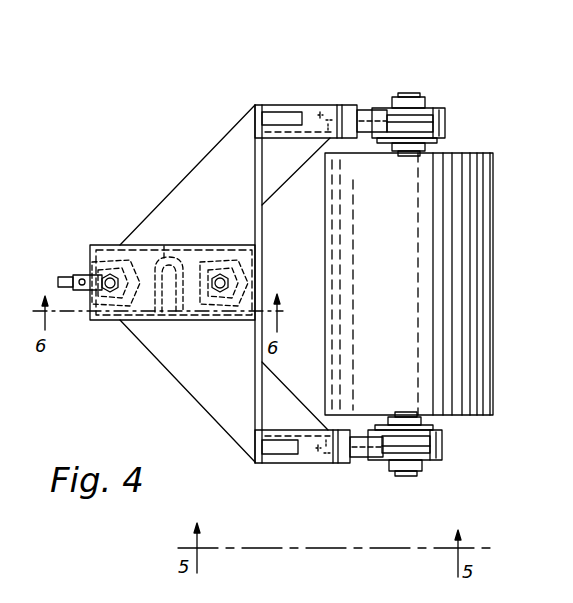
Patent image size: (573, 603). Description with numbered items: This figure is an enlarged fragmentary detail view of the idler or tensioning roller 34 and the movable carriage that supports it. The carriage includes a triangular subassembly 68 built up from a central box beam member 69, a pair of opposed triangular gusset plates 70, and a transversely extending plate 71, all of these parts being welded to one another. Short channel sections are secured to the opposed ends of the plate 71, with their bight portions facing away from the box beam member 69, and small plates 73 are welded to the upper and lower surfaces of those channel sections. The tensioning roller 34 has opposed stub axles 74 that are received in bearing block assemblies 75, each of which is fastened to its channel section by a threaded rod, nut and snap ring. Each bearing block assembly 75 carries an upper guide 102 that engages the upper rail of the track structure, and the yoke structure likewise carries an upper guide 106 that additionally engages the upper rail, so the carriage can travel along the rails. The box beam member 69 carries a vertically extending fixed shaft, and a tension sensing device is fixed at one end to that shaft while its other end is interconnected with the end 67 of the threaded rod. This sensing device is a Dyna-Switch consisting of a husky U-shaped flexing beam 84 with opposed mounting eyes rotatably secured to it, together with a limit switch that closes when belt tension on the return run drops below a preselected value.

The idler or tensioning roller 34 is at (494, 339).
The end of the threaded rod 67 is at (70, 277).
The triangular subassembly 68 is at (162, 168).
The central box beam member 69 is at (107, 245).
The triangular gusset plates 70 is at (226, 139).
The transversely extending plate 71 is at (256, 128).
The small plates 73 is at (325, 108).
The stub axles 74 is at (420, 155).
The bearing block assemblies 75 is at (446, 120).
The U-shaped flexing beam 84 is at (166, 245).
The upper guide 102 is at (423, 112).
The upper guide 106 is at (283, 112).